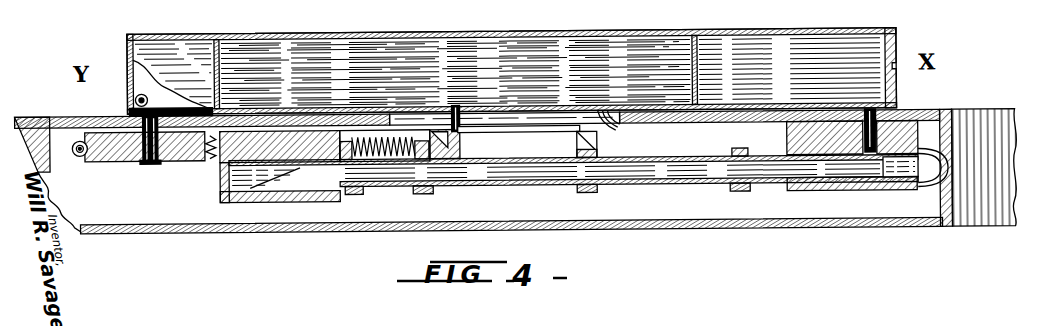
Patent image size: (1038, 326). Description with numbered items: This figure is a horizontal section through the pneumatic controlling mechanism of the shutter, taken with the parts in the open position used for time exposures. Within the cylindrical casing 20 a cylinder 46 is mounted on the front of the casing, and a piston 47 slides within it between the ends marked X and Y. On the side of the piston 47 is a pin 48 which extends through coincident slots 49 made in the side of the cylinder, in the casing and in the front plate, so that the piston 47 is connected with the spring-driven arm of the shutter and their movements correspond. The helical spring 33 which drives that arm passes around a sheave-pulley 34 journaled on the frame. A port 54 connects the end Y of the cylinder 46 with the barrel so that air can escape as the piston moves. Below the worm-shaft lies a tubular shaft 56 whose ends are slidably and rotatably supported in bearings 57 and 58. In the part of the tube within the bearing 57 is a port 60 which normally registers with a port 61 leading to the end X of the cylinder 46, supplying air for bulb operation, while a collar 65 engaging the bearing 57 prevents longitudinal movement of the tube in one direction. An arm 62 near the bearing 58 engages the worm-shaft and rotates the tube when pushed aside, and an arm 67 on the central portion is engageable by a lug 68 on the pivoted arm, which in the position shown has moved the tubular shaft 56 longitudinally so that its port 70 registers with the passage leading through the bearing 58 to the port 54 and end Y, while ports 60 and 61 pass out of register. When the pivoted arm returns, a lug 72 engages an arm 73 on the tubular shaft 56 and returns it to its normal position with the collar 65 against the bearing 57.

The casing 20 is at (967, 114).
The helical spring 33 is at (80, 153).
The sheave-pulley 34 is at (122, 159).
The cylinder 46 is at (128, 35).
The piston 47 is at (283, 32).
The pin 48 is at (458, 106).
The slots 49 is at (620, 125).
The port 54 is at (136, 98).
The tubular shaft 56 is at (527, 186).
The bearing 57 is at (823, 192).
The bearing 58 is at (318, 192).
The port 60 is at (836, 163).
The port 61 is at (878, 112).
The arm 62 is at (352, 193).
The collar 65 is at (740, 193).
The arm 67 is at (420, 193).
The lug 68 is at (446, 141).
The port 70 is at (298, 176).
The lug 72 is at (482, 134).
The arm 73 is at (586, 193).